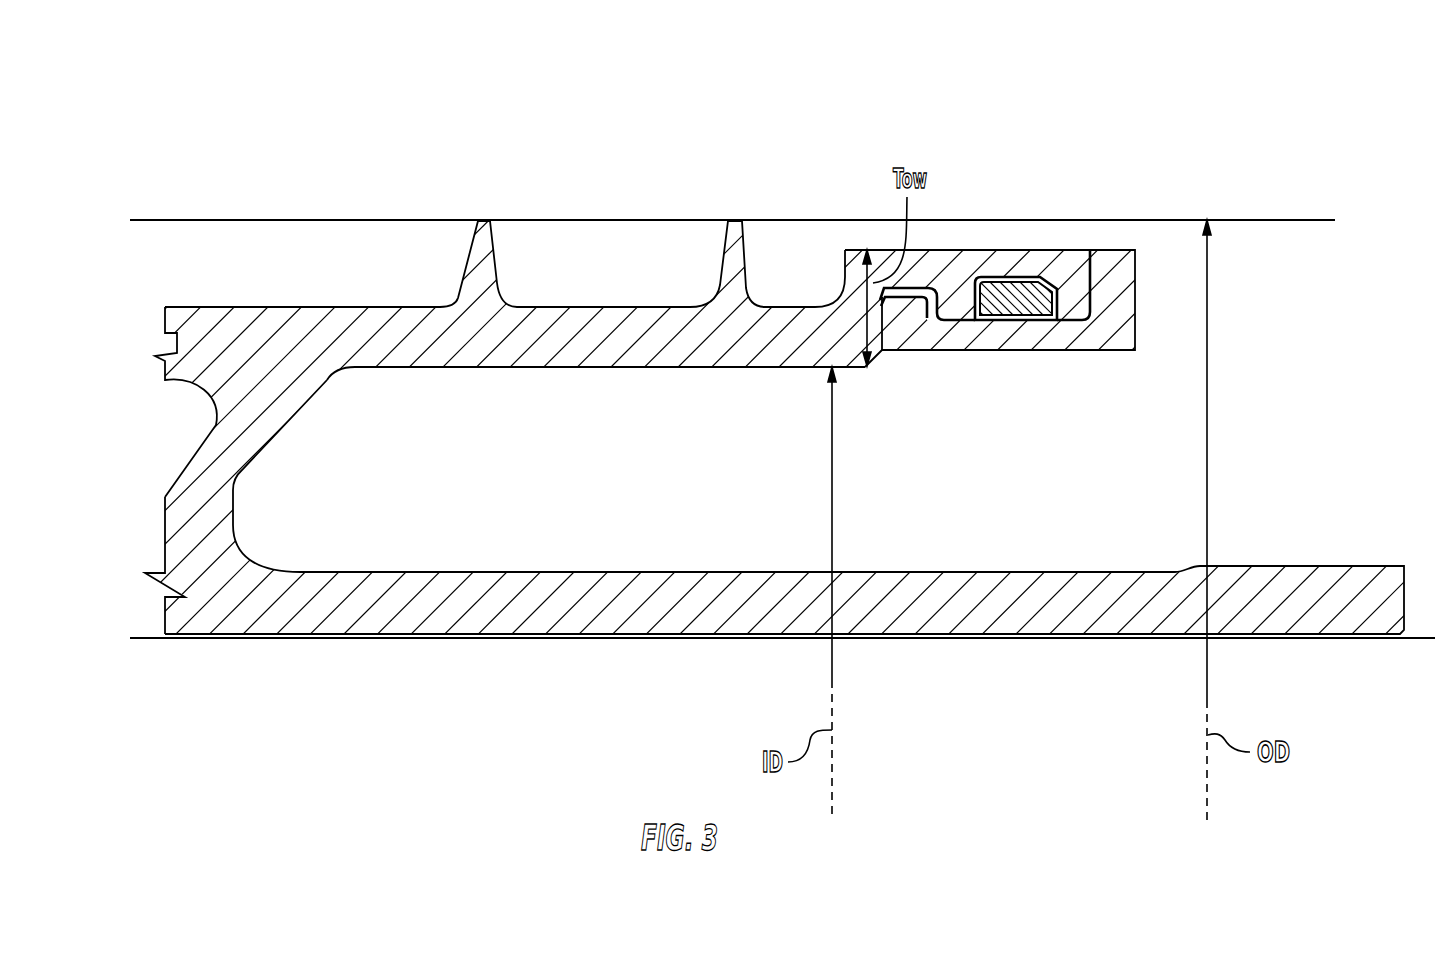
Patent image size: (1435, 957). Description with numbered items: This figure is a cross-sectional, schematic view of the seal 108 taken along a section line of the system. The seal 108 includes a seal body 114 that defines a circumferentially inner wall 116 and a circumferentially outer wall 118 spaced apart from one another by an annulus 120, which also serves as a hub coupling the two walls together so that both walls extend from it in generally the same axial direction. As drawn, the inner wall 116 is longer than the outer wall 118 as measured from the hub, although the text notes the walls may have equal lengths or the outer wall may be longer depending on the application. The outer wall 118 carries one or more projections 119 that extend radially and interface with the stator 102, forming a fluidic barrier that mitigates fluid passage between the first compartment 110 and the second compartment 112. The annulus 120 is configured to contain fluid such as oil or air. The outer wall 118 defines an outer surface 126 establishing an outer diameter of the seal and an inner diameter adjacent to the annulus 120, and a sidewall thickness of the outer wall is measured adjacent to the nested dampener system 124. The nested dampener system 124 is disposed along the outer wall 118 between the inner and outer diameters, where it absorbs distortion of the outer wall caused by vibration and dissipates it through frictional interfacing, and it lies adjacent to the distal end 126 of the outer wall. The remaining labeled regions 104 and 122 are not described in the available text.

The stator 102 is at (870, 98).
The lower component 104 is at (914, 850).
The seal 108 is at (858, 617).
The first compartment 110 is at (1293, 429).
The second compartment 112 is at (180, 427).
The seal body 114 is at (482, 615).
The circumferentially inner wall 116 is at (670, 618).
The circumferentially outer wall 118 is at (388, 322).
The projections 119 is at (733, 237).
The annulus 120 is at (726, 470).
The web 122 is at (245, 440).
The nested dampener system 124 is at (1050, 381).
The outer surface 126 is at (1090, 250).